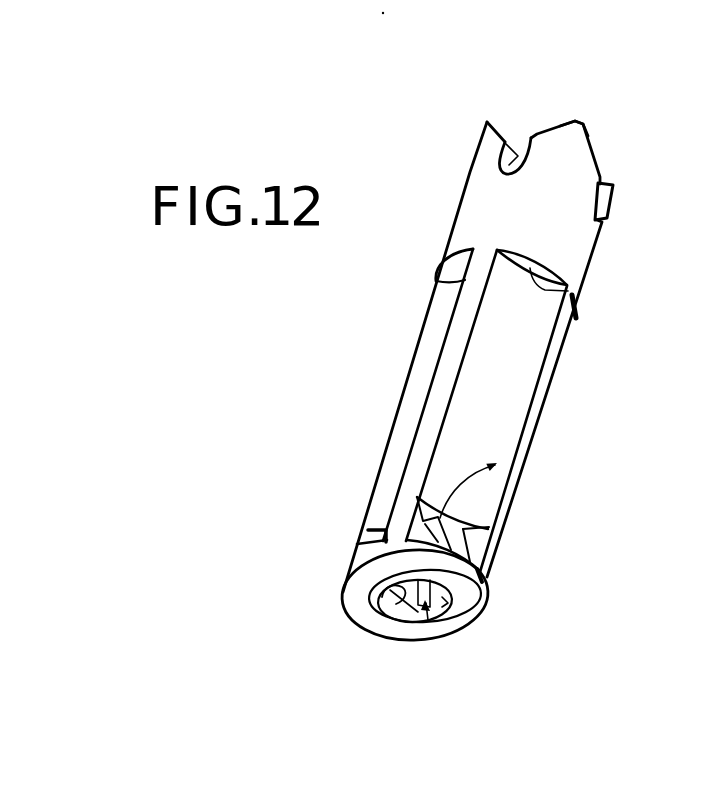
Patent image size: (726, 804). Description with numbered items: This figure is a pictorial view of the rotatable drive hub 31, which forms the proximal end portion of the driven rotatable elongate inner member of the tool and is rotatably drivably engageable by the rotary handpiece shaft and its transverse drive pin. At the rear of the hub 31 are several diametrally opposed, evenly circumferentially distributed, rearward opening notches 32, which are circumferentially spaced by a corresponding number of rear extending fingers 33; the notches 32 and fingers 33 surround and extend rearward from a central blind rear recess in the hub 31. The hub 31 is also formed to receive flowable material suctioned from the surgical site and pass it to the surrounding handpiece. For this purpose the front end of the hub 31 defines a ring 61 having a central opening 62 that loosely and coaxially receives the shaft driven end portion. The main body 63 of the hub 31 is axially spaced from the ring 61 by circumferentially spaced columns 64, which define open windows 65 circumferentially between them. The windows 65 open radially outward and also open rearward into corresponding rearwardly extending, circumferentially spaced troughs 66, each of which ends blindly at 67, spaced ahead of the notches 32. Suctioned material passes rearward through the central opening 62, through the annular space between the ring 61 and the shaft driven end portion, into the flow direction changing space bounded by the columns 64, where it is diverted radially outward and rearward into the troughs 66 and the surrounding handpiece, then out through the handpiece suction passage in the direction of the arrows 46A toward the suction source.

The hub 31 is at (645, 194).
The notches 32 is at (512, 162).
The fingers 33 is at (574, 120).
The arrows 46A is at (428, 620).
The ring 61 is at (453, 628).
The central opening 62 is at (406, 605).
The main body 63 is at (572, 268).
The columns 64 is at (357, 537).
The windows 65 is at (478, 546).
The troughs 66 is at (430, 341).
The blind end 67 is at (573, 290).